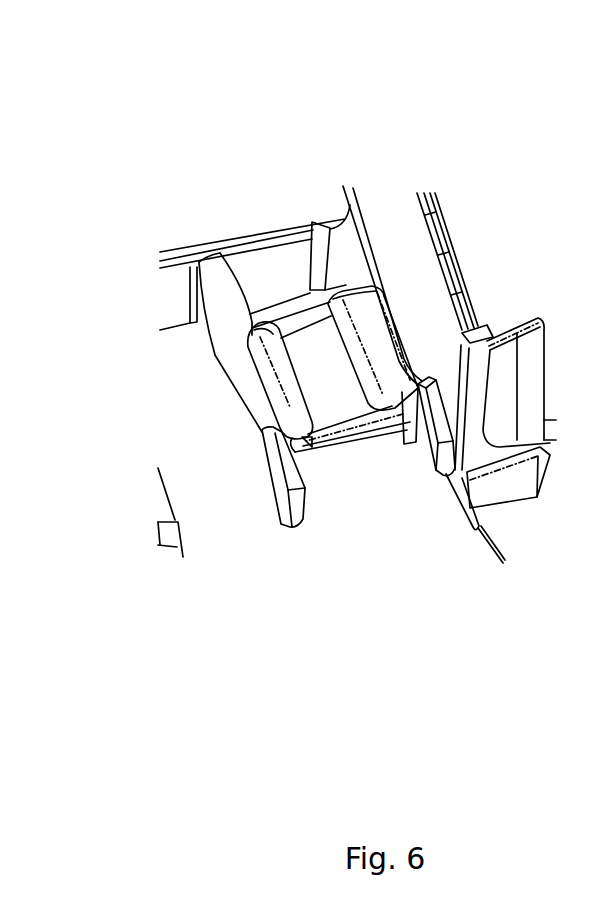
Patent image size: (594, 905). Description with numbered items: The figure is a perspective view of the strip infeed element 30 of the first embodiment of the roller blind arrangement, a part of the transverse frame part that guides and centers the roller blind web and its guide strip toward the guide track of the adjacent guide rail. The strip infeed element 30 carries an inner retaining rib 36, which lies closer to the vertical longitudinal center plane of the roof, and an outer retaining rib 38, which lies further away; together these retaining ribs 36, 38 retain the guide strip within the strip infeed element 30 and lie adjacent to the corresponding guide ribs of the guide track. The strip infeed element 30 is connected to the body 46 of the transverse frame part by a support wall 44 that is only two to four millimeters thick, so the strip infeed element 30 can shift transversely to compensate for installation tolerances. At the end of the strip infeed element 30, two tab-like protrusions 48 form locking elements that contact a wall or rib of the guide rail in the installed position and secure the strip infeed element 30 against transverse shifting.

The strip infeed element 30 is at (348, 440).
The inner retaining rib 36 is at (288, 405).
The outer retaining rib 38 is at (357, 355).
The support wall 44 is at (243, 303).
The body 46 is at (268, 252).
The tab-like protrusion 48 is at (292, 517).